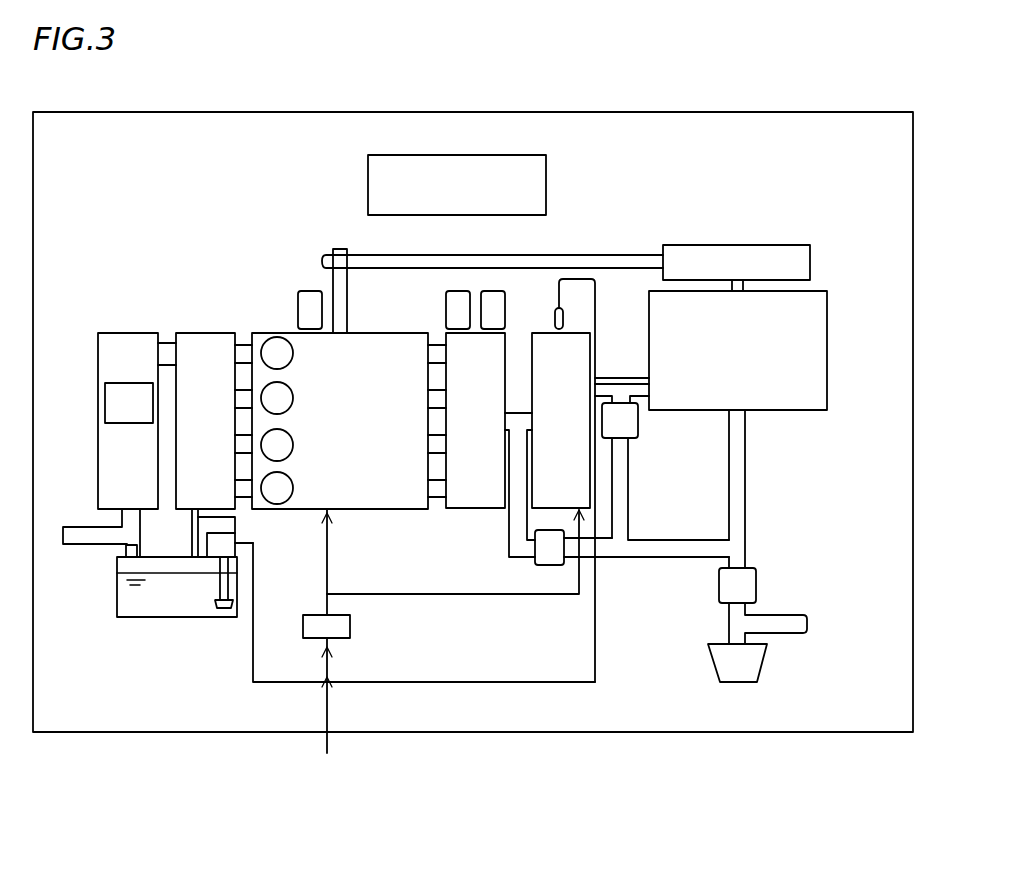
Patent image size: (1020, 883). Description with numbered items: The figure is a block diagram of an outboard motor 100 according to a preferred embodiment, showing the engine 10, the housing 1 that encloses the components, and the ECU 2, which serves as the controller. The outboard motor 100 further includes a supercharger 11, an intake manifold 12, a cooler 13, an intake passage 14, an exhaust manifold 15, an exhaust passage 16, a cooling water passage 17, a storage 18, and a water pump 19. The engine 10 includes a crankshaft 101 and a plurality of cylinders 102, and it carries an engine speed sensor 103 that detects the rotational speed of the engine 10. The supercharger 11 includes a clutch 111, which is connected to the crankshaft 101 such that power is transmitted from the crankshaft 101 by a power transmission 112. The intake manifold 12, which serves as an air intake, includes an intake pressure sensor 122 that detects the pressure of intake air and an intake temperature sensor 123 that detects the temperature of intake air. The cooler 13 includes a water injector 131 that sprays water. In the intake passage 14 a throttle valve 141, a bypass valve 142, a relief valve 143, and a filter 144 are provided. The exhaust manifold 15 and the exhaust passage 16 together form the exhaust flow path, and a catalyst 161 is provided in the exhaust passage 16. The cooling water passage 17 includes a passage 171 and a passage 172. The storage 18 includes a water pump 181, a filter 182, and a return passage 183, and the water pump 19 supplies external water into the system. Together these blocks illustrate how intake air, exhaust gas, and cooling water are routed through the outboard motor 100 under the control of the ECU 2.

The outboard motor 100 is at (473, 408).
The housing 1 is at (809, 110).
The ECU 2 is at (547, 161).
The engine 10 is at (349, 446).
The crankshaft 101 is at (332, 285).
The cylinders 102 is at (294, 355).
The engine speed sensor 103 is at (298, 305).
The supercharger 11 is at (829, 303).
The clutch 111 is at (778, 246).
The power transmission 112 is at (600, 256).
The intake manifold 12 is at (481, 511).
The intake pressure sensor 122 is at (490, 291).
The intake temperature sensor 123 is at (460, 291).
The cooler 13 is at (577, 480).
The water injector 131 is at (558, 312).
The intake passage 14 is at (653, 539).
The throttle valve 141 is at (757, 578).
The bypass valve 142 is at (535, 560).
The relief valve 143 is at (639, 425).
The filter 144 is at (713, 668).
The exhaust manifold 15 is at (195, 333).
The exhaust passage 16 is at (105, 410).
The catalyst 161 is at (110, 400).
The cooling water passage 17 is at (315, 631).
The passage 171 is at (200, 517).
The passage 172 is at (456, 682).
The storage 18 is at (136, 579).
The water pump 181 is at (237, 543).
The filter 182 is at (215, 606).
The return passage 183 is at (122, 551).
The water pump 19 is at (351, 628).